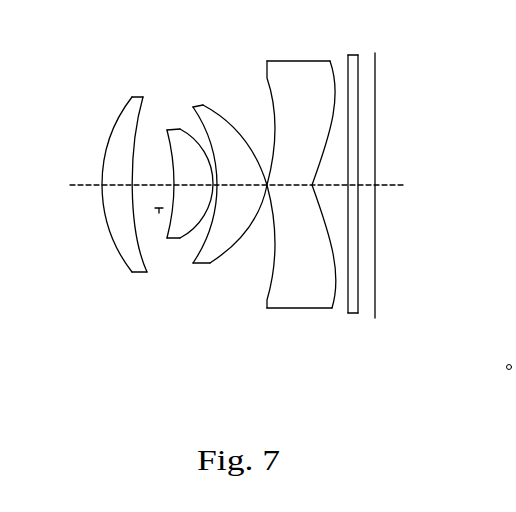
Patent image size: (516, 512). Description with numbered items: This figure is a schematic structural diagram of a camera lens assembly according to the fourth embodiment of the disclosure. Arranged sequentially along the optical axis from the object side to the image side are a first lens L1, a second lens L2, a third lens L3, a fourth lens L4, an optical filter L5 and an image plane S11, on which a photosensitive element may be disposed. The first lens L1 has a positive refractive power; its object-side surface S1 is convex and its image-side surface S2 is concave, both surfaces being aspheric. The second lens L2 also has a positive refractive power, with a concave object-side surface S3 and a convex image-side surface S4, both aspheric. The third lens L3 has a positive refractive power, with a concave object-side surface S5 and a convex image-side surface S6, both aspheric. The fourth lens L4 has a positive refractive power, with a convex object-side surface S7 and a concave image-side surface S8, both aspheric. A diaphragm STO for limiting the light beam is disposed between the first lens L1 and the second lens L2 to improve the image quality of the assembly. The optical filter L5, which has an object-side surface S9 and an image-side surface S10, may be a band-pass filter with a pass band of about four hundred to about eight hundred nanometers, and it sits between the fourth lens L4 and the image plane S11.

The first lens L1 is at (82, 186).
The second lens L2 is at (155, 186).
The third lens L3 is at (236, 186).
The fourth lens L4 is at (319, 186).
The optical filter L5 is at (404, 186).
The diaphragm STO is at (160, 160).
The object-side surface of the first lens S1 is at (102, 185).
The image-side surface of the first lens S2 is at (133, 185).
The object-side surface of the second lens S3 is at (175, 185).
The image-side surface of the second lens S4 is at (213, 185).
The object-side surface of the third lens S5 is at (217, 185).
The image-side surface of the third lens S6 is at (267, 185).
The object-side surface of the fourth lens S7 is at (267, 185).
The image-side surface of the fourth lens S8 is at (312, 185).
The object-side surface of the optical filter S9 is at (348, 185).
The image-side surface of the optical filter S10 is at (358, 185).
The image plane S11 is at (375, 185).